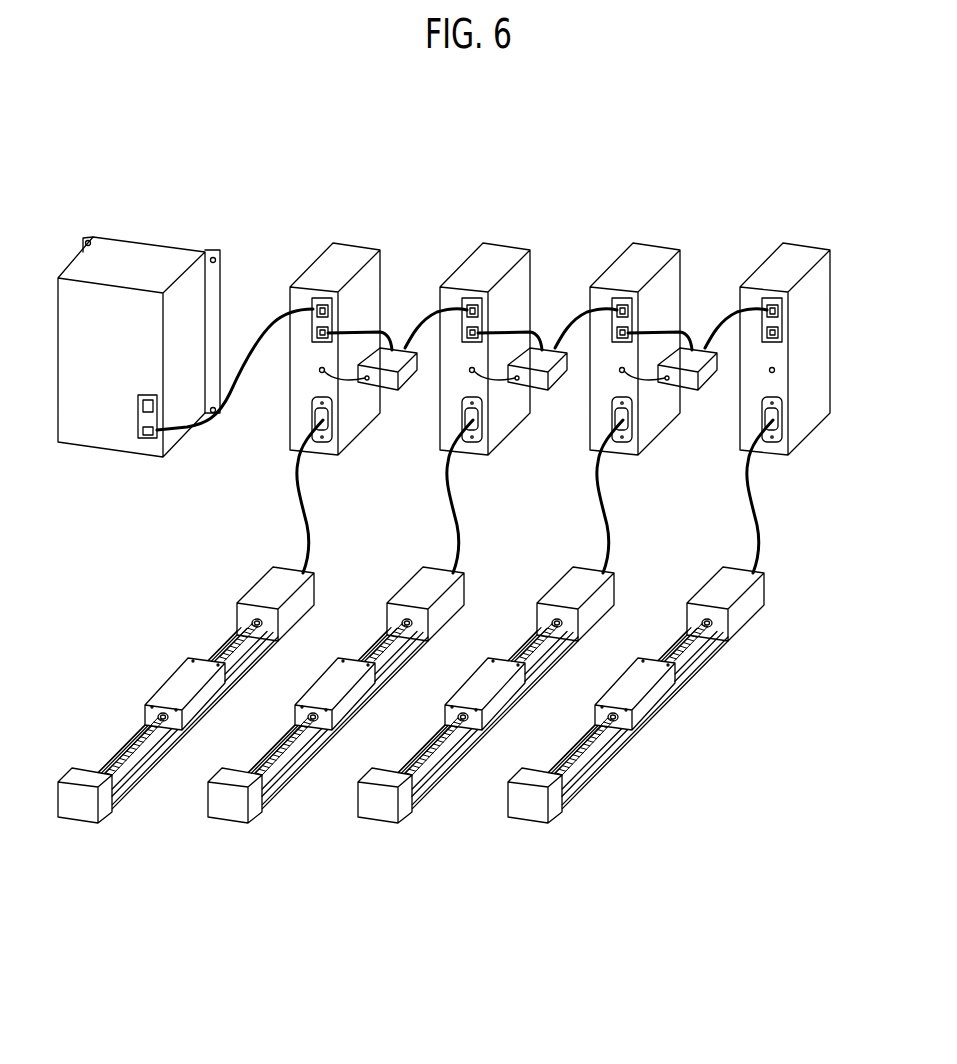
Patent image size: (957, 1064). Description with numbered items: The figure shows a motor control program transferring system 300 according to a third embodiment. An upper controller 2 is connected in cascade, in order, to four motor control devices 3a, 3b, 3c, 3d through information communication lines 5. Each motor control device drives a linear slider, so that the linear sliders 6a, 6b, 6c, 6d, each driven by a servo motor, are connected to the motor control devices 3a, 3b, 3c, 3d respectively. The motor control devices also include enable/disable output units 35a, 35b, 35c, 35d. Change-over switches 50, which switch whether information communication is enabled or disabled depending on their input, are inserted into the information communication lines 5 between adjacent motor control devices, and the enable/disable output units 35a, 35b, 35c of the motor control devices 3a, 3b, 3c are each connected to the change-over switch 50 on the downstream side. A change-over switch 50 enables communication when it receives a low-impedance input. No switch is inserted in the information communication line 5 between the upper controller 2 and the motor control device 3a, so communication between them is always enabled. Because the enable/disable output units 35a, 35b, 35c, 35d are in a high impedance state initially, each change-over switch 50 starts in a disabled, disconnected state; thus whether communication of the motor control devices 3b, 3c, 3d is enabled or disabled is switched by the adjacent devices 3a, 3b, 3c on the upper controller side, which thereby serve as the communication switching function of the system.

The upper controller 2 is at (148, 242).
The motor control device 3a is at (345, 243).
The motor control device 3b is at (491, 323).
The motor control device 3c is at (640, 323).
The motor control device 3d is at (791, 323).
The information communication line 5 is at (267, 327).
The linear slider 6a is at (77, 825).
The linear slider 6b is at (336, 725).
The linear slider 6c is at (486, 725).
The linear slider 6d is at (636, 725).
The enable/disable output unit 35a is at (317, 372).
The enable/disable output unit 35b is at (434, 396).
The enable/disable output unit 35c is at (585, 396).
The enable/disable output unit 35d is at (775, 371).
The change-over switch 50 is at (387, 393).
The motor control program transferring system 300 is at (665, 864).